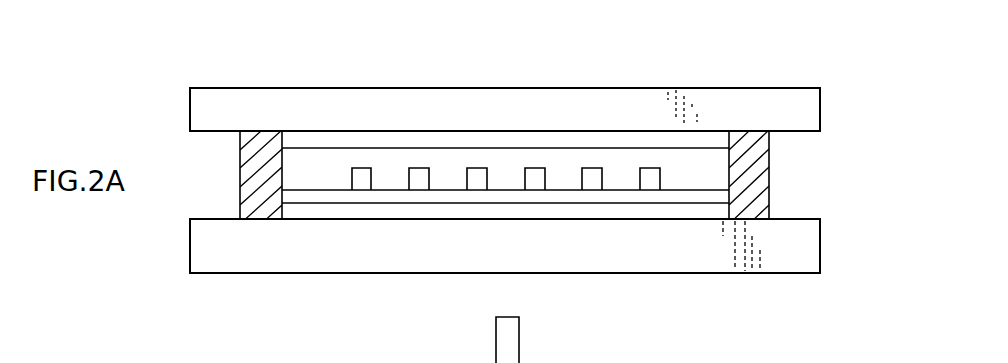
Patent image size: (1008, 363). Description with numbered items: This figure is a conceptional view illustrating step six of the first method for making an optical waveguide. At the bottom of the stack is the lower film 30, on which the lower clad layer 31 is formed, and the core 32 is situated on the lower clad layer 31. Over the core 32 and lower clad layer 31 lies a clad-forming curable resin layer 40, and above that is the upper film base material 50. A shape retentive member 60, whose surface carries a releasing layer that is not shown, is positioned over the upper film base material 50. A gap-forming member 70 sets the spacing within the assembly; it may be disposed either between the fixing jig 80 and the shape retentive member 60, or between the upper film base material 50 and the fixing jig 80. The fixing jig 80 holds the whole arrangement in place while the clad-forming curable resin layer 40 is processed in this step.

The lower film 30 is at (628, 205).
The lower clad layer 31 is at (685, 195).
The core 32 is at (360, 185).
The clad-forming curable resin layer 40 is at (318, 163).
The upper film base material 50 is at (563, 143).
The shape retentive member 60 is at (803, 111).
The gap-forming member 70 is at (765, 182).
The fixing jig 80 is at (803, 248).